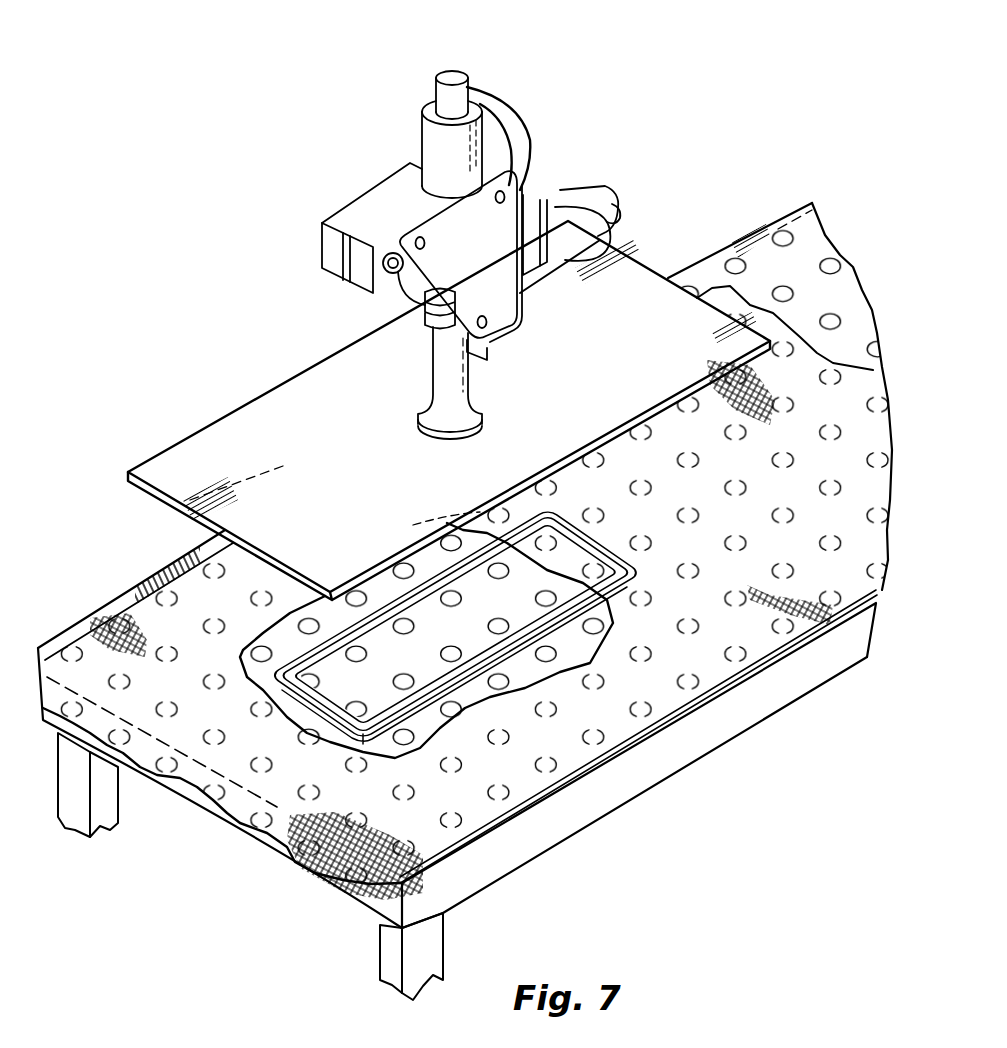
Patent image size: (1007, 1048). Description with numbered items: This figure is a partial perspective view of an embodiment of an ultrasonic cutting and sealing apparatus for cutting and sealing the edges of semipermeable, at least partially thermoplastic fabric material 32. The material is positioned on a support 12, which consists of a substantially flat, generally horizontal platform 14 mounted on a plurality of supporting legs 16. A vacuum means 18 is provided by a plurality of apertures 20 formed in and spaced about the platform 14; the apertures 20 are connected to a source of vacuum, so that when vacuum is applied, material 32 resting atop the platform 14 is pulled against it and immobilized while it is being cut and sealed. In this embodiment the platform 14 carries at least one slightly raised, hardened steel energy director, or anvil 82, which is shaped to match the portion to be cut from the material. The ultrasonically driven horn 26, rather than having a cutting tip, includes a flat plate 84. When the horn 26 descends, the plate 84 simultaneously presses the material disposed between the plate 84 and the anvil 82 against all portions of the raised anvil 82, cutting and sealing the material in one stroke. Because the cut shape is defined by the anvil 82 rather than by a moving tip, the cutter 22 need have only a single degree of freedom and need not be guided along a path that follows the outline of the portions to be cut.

The support 12 is at (260, 862).
The platform 14 is at (603, 793).
The supporting legs 16 is at (110, 800).
The vacuum means 18 is at (808, 258).
The apertures 20 is at (700, 690).
The cutter 22 is at (548, 120).
The ultrasonically driven horn 26 is at (433, 360).
The material 32 is at (360, 887).
The anvil 82 is at (165, 576).
The flat plate 84 is at (277, 387).